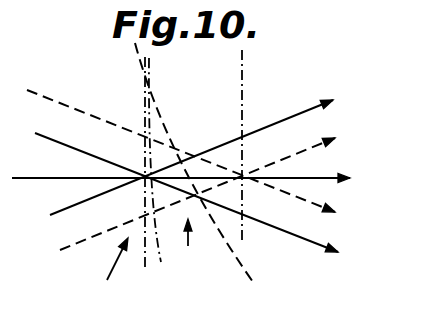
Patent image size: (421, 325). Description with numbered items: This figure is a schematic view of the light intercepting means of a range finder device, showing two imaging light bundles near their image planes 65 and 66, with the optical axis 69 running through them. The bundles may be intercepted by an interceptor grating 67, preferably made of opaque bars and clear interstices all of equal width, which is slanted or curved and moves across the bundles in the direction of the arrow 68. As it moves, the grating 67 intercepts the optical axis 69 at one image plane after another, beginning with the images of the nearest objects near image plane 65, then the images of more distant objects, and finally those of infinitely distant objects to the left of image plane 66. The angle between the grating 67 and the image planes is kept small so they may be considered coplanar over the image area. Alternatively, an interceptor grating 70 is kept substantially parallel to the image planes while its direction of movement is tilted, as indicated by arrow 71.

The image plane 65 is at (242, 243).
The image plane 66 is at (145, 268).
The interceptor grating 67 is at (166, 125).
The arrow 68 is at (188, 245).
The optical axis 69 is at (181, 171).
The interceptor grating 70 is at (172, 172).
The arrow 71 is at (109, 259).